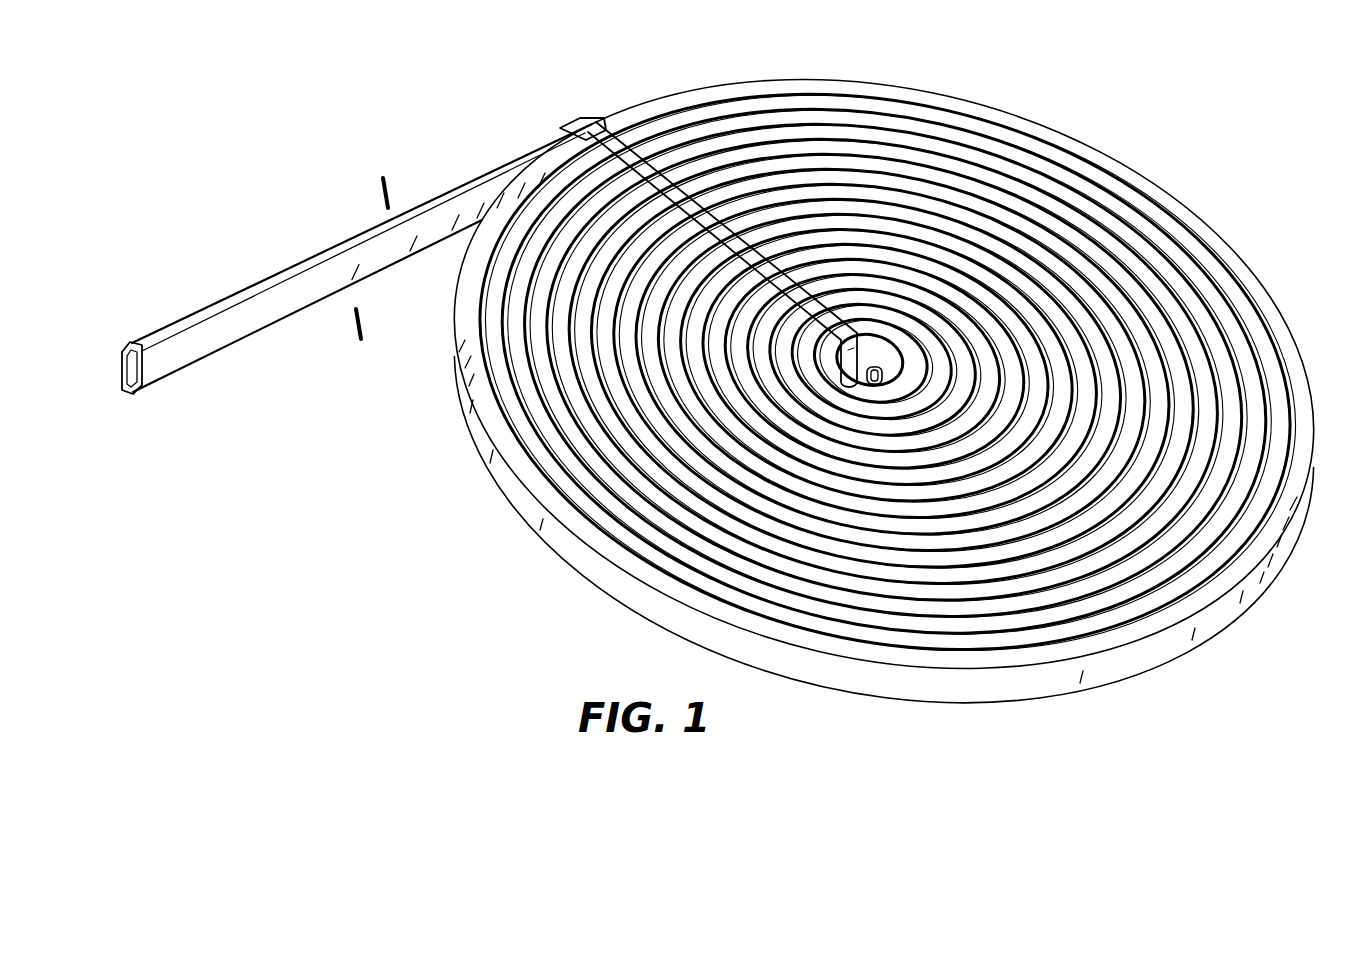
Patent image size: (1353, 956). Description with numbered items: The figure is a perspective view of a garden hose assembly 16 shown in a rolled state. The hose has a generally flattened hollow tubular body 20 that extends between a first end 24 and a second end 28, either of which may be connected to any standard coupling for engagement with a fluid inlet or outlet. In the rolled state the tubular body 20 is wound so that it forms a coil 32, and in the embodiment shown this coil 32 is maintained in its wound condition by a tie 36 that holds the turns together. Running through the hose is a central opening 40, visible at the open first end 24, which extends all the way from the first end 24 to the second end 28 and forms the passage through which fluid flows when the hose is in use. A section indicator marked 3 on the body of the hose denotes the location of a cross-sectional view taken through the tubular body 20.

The garden hose assembly 16 is at (680, 74).
The tubular body 20 is at (598, 567).
The first end 24 is at (340, 296).
The second end 28 is at (886, 355).
The coil 32 is at (1040, 126).
The tie 36 is at (603, 120).
The central opening 40 is at (122, 398).
The section line 3- 3 is at (372, 198).